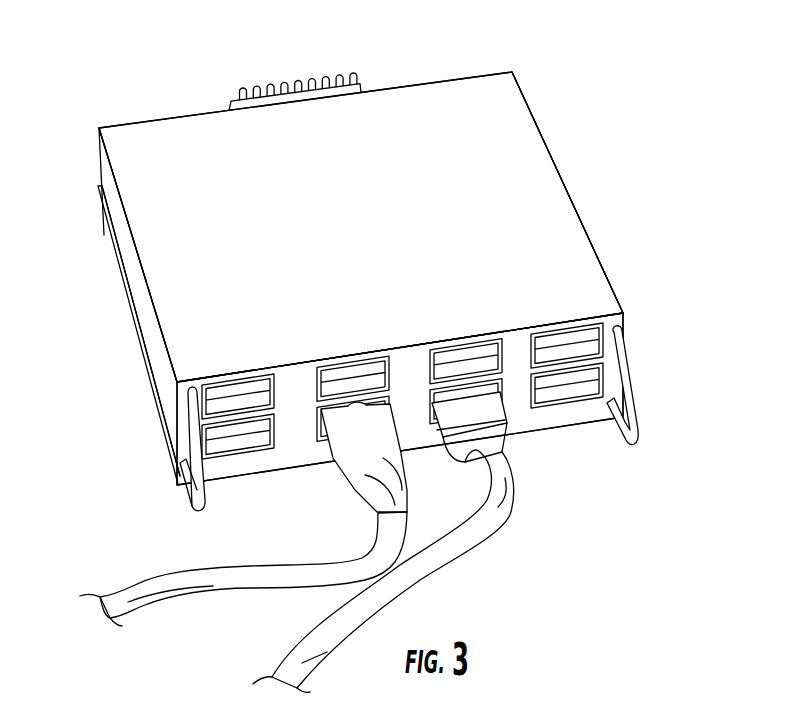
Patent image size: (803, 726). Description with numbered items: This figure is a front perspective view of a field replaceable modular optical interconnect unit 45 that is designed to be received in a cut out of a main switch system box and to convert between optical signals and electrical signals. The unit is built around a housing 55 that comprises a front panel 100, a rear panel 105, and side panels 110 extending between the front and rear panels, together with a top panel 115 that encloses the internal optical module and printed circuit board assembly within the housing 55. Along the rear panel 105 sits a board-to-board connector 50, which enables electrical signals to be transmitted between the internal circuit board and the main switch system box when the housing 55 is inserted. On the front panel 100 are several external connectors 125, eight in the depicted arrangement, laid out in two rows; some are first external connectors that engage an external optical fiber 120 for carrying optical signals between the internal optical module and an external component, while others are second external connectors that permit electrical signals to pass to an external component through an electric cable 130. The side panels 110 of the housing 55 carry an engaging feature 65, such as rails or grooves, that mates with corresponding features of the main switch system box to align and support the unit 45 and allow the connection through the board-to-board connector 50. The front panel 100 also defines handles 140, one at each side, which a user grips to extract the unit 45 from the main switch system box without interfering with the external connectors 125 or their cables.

The field replaceable modular optical interconnect unit 45 is at (570, 434).
The board-to-board connector 50 is at (233, 100).
The housing 55 is at (173, 169).
The engaging feature 65 is at (118, 258).
The front panel 100 is at (612, 362).
The rear panel 105 is at (417, 83).
The side panels 110 is at (138, 333).
The top panel 115 is at (453, 246).
The external optical fiber 120 is at (217, 570).
The external connectors 125 is at (238, 452).
The electric cable 130 is at (467, 538).
The handles 140 is at (637, 400).